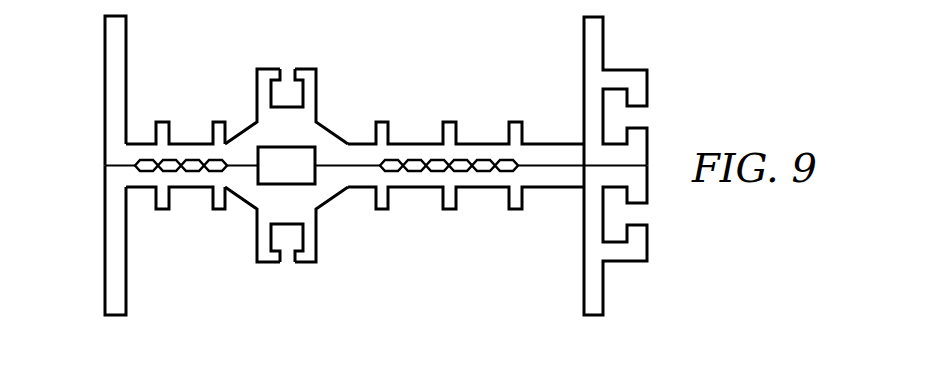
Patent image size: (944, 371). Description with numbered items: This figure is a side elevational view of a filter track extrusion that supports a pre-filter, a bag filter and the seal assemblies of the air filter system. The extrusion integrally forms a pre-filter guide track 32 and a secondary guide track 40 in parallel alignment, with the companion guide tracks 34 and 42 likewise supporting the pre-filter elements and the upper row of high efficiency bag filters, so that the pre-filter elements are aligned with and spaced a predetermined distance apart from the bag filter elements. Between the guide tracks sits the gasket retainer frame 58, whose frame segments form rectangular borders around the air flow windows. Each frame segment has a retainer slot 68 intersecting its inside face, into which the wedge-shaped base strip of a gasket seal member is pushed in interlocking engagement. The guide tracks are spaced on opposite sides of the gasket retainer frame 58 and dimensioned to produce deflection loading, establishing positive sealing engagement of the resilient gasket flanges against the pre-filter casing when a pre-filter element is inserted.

The upper pre-filter guide track 32 is at (605, 285).
The filter guide track 34 is at (607, 35).
The upper secondary guide track 40 is at (105, 241).
The filter guide track 42 is at (105, 94).
The gasket retainer frame 58 is at (307, 116).
The retainer slot 68 is at (288, 90).